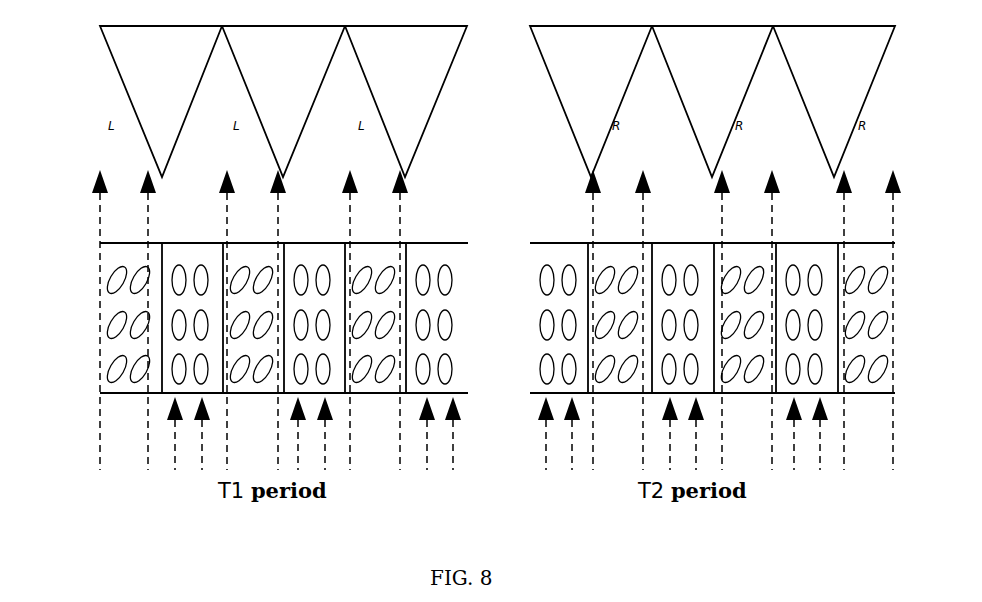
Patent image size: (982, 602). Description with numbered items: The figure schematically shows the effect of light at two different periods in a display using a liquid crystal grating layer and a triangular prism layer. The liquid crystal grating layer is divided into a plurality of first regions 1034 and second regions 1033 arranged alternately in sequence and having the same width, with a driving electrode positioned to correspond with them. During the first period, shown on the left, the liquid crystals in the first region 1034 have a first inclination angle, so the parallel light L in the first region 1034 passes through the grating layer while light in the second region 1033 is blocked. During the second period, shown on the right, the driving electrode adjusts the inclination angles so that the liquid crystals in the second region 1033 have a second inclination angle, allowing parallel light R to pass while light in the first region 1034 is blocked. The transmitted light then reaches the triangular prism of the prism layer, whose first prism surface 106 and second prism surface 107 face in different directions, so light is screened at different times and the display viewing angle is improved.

The first prism surface 106 is at (118, 82).
The second prism surface 107 is at (445, 93).
The second region 1033 is at (185, 432).
The first region 1034 is at (117, 397).